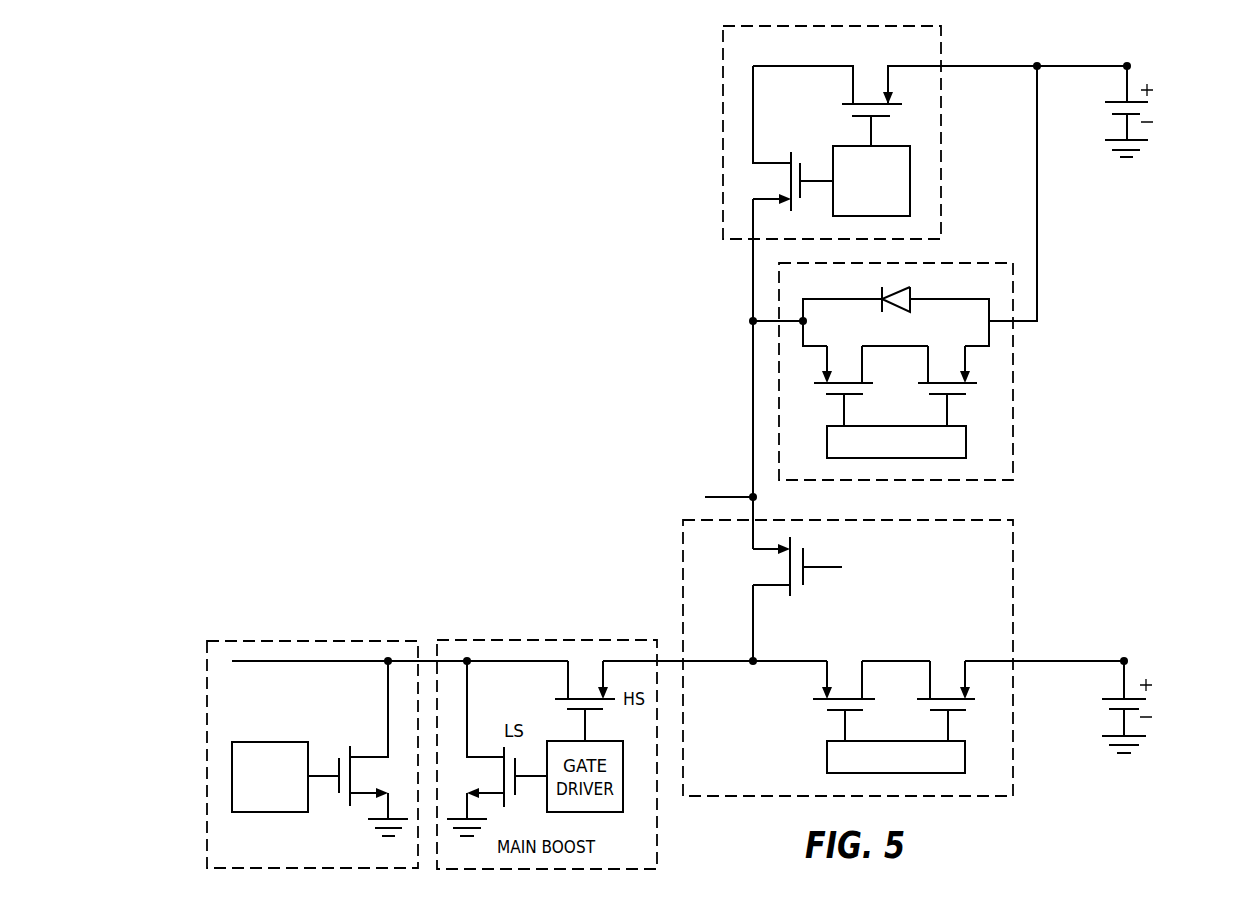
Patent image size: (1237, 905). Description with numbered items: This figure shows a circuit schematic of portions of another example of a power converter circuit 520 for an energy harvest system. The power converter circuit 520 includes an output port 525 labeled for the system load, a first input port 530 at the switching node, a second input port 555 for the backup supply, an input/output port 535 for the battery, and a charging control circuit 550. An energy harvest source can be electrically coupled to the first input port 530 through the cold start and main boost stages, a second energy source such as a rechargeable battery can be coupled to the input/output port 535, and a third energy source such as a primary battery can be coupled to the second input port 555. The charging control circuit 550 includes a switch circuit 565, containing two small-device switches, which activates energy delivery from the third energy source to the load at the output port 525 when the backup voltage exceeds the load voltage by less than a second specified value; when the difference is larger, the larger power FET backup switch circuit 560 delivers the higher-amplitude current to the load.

The power converter circuit 520 is at (320, 103).
The output port 525 is at (757, 496).
The first input port 530 is at (387, 657).
The input/output port 535 is at (1128, 658).
The charging control circuit 550 is at (840, 520).
The second input port 555 is at (1035, 63).
The backup switch circuit 560 is at (941, 133).
The switch circuit 565 is at (1013, 371).